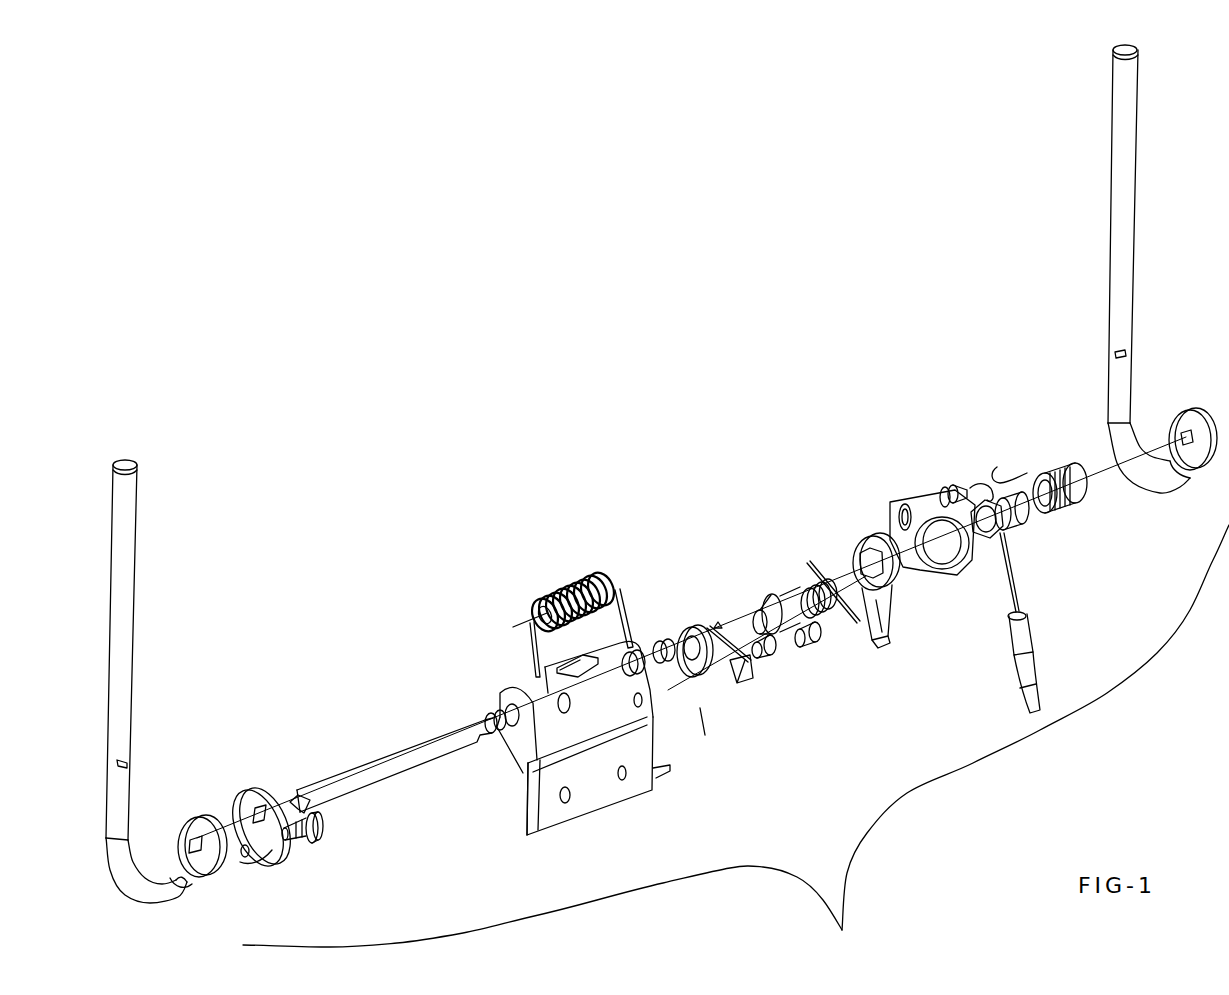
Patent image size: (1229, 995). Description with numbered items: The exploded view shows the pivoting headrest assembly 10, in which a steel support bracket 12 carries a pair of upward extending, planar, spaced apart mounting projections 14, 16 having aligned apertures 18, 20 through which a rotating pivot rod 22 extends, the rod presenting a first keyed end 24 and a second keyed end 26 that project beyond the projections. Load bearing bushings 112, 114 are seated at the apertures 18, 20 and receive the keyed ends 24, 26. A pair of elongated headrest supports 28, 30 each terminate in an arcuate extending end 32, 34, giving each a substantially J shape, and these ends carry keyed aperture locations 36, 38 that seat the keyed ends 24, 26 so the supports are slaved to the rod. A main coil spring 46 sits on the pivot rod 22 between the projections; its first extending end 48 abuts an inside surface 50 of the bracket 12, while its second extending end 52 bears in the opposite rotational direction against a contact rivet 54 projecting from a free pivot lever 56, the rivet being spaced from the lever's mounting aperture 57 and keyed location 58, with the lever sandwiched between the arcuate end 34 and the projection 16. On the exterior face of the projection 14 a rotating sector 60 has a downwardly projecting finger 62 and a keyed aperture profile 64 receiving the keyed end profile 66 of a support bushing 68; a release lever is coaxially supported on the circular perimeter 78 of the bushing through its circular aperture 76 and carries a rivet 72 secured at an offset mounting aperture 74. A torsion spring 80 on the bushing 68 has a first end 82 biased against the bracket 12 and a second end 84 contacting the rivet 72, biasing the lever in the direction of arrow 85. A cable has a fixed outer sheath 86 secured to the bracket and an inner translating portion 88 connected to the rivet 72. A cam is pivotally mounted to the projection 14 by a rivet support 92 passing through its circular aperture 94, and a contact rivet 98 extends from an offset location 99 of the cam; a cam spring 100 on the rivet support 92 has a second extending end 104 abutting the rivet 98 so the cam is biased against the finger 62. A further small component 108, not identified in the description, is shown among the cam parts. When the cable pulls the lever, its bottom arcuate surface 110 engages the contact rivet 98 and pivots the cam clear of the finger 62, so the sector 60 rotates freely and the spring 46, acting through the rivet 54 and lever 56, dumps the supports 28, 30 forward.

The pivoting headrest assembly 10 is at (736, 740).
The support bracket 12 is at (587, 792).
The mounting projection 14 is at (703, 735).
The mounting projection 16 is at (518, 790).
The aperture 18 is at (490, 700).
The aperture 20 is at (675, 640).
The pivot rod 22 is at (397, 770).
The first keyed end 24 is at (490, 722).
The second keyed end 26 is at (296, 792).
The headrest support 28 is at (1112, 232).
The headrest support 30 is at (133, 637).
The arcuate extending end 32 is at (1193, 473).
The arcuate extending end 34 is at (205, 860).
The keyed aperture location 36 is at (1205, 420).
The keyed aperture location 38 is at (190, 830).
The main coil spring 46 is at (547, 605).
The first extending end 48 is at (632, 652).
The inside surface 50 is at (655, 775).
The second extending end 52 is at (590, 745).
The contact rivet 54 is at (308, 842).
The free pivot lever 56 is at (248, 806).
The mounting aperture 57 is at (245, 860).
The keyed location 58 is at (275, 850).
The rotating sector 60 is at (845, 575).
The projecting finger 62 is at (896, 630).
The keyed aperture profile 64 is at (902, 592).
The keyed end profile 66 is at (967, 483).
The support bushing 68 is at (1003, 524).
The rivet 72 is at (945, 493).
The mounting aperture 74 is at (890, 503).
The circular aperture 76 is at (960, 545).
The circular shaped perimeter 78 is at (1022, 525).
The torsion spring 80 is at (1063, 463).
The first end 82 is at (1072, 512).
The second biased end 84 is at (1003, 468).
The arrow 85 is at (940, 562).
The fixed outer sheath 86 is at (1040, 638).
The inner translating portion 88 is at (1012, 572).
The rivet support 92 is at (767, 598).
The circular aperture 94 is at (695, 677).
The contact rivet 98 is at (772, 655).
The location 99 is at (745, 685).
The cam spring 100 is at (815, 590).
The second extending end 104 is at (882, 636).
The collar 108 is at (818, 640).
The bottom arcuate surface 110 is at (860, 552).
The load bearing bushing 112 is at (705, 632).
The load bearing bushing 114 is at (488, 716).